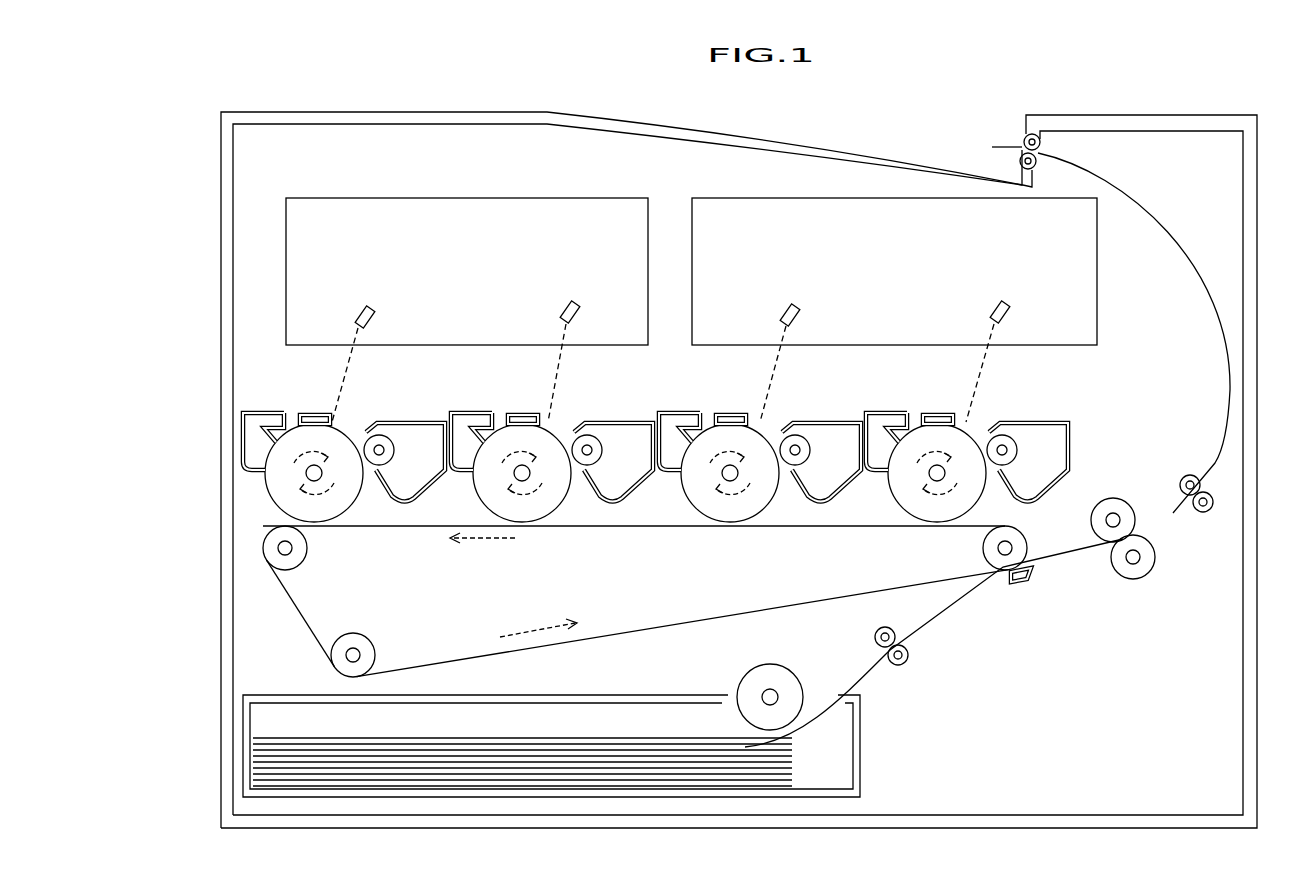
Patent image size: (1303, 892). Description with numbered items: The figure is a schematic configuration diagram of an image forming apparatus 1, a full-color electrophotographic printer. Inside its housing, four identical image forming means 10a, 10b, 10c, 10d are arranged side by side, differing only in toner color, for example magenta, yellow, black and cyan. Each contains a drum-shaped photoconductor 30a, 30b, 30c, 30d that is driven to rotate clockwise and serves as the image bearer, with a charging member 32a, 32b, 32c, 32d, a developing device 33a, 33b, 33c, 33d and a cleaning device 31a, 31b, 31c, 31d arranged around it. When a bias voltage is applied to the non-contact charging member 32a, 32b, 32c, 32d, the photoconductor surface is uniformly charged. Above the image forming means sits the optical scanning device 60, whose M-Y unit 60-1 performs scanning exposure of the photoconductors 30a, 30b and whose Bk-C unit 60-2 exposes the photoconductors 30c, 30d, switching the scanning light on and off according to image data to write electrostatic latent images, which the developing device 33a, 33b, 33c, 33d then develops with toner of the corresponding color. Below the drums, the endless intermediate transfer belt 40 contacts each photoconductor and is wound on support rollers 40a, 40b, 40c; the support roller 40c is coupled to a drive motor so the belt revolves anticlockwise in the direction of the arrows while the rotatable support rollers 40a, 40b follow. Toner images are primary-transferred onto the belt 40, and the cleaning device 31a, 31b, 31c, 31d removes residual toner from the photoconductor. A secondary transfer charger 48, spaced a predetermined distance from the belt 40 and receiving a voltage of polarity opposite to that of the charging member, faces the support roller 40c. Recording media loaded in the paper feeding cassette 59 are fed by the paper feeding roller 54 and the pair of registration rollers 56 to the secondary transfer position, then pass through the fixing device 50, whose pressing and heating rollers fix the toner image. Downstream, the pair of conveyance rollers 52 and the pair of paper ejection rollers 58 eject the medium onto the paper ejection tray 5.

The image forming apparatus 1 is at (198, 229).
The paper ejection tray 5 is at (925, 162).
The first image forming means 10a is at (292, 400).
The second image forming means 10b is at (500, 400).
The third image forming means 10c is at (708, 400).
The fourth image forming means 10d is at (915, 400).
The photoconductor 30a is at (358, 510).
The photoconductor 30b is at (566, 510).
The photoconductor 30c is at (774, 510).
The photoconductor 30d is at (981, 510).
The cleaning device 31a is at (252, 480).
The cleaning device 31b is at (464, 480).
The cleaning device 31c is at (672, 480).
The cleaning device 31d is at (879, 480).
The charging member 32a is at (316, 414).
The charging member 32b is at (524, 414).
The charging member 32c is at (732, 414).
The charging member 32d is at (939, 414).
The developing device 33a is at (410, 421).
The developing device 33b is at (618, 421).
The developing device 33c is at (826, 421).
The developing device 33d is at (1040, 411).
The intermediate transfer belt 40 is at (625, 540).
The support roller 40a is at (306, 552).
The support roller 40b is at (370, 633).
The support roller 40c is at (983, 543).
The secondary transfer charger 48 is at (1022, 585).
The fixing device 50 is at (1161, 573).
The pair of conveyance rollers 52 is at (1181, 472).
The paper feeding roller 54 is at (783, 668).
The pair of registration rollers 56 is at (926, 656).
The pair of paper ejection rollers 58 is at (1021, 140).
The paper feeding cassette 59 is at (862, 731).
The optical scanning device 60 is at (691, 297).
The M-Y unit 60-1 is at (478, 188).
The Bk-C unit 60-2 is at (757, 190).